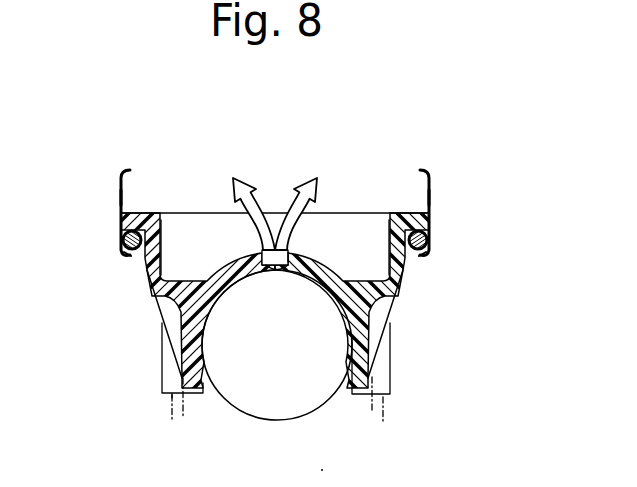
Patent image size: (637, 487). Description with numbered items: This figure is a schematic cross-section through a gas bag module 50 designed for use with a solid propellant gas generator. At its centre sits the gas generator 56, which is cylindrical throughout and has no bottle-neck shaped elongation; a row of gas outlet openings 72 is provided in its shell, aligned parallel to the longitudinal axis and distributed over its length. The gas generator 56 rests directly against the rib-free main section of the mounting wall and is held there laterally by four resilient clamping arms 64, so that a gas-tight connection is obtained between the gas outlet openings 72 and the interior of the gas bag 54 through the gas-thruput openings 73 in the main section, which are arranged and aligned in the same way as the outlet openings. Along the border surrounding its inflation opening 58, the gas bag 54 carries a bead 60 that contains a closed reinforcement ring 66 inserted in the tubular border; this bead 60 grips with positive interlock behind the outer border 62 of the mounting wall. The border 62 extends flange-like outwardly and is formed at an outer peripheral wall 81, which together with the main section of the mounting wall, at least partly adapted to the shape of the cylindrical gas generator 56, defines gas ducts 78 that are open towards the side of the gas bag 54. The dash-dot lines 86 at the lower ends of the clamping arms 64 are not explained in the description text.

The gas bag module 50 is at (281, 174).
The gas bag 54 is at (122, 172).
The gas generator 56 is at (242, 411).
The inflation opening 58 is at (122, 206).
The bead 60 is at (122, 254).
The outer border 62 is at (141, 215).
The resilient clamping arms 64 is at (190, 379).
The reinforcement ring 66 is at (123, 241).
The gas outlet openings 72 is at (276, 271).
The gas-thruput openings 73 is at (289, 262).
The gas ducts 78 is at (198, 253).
The outer peripheral wall 81 is at (143, 286).
The axis line 86 is at (172, 420).